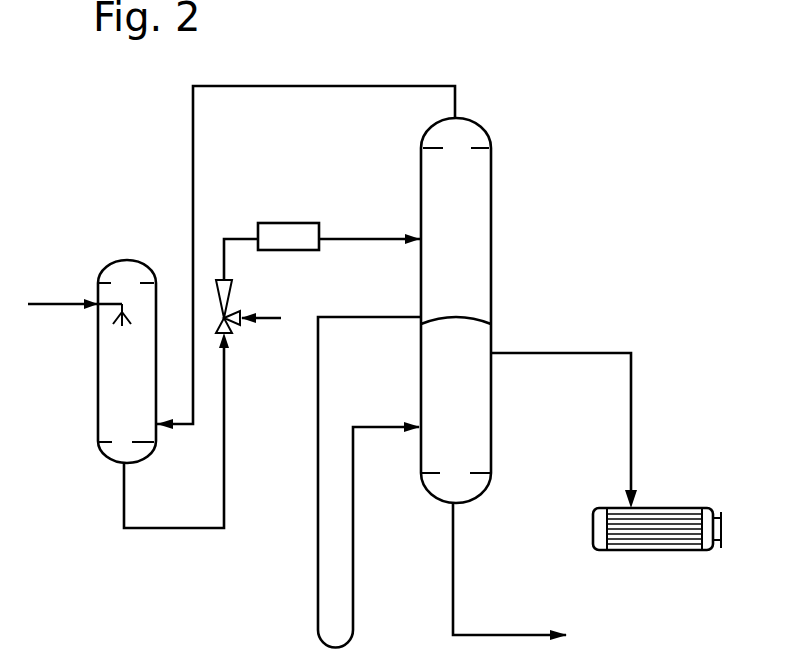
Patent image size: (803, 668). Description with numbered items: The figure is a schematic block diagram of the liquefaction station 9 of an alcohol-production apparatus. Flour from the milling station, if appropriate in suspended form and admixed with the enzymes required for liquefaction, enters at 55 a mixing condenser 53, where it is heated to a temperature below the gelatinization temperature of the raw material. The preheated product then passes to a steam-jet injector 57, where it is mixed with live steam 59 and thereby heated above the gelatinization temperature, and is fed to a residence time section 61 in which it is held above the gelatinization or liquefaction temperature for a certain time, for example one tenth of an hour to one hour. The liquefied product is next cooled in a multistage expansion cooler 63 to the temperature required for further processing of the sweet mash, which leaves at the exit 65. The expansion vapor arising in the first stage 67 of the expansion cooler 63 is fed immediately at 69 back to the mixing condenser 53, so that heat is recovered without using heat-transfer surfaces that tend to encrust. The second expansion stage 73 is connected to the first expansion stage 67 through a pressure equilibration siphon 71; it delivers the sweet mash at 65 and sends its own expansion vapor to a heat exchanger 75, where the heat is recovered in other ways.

The liquefaction station 9 is at (607, 227).
The mixing condenser 53 is at (98, 370).
The flour feed 55 is at (45, 304).
The steam-jet injector 57 is at (232, 284).
The live steam 59 is at (268, 322).
The residence time section 61 is at (289, 223).
The multistage expansion cooler 63 is at (497, 273).
The exit 65 is at (454, 565).
The first stage of the expansion cooler 67 is at (482, 170).
The expansion vapor feed 69 is at (185, 427).
The pressure equilibration siphon 71 is at (353, 607).
The second expansion stage 73 is at (472, 433).
The heat exchanger 75 is at (678, 508).